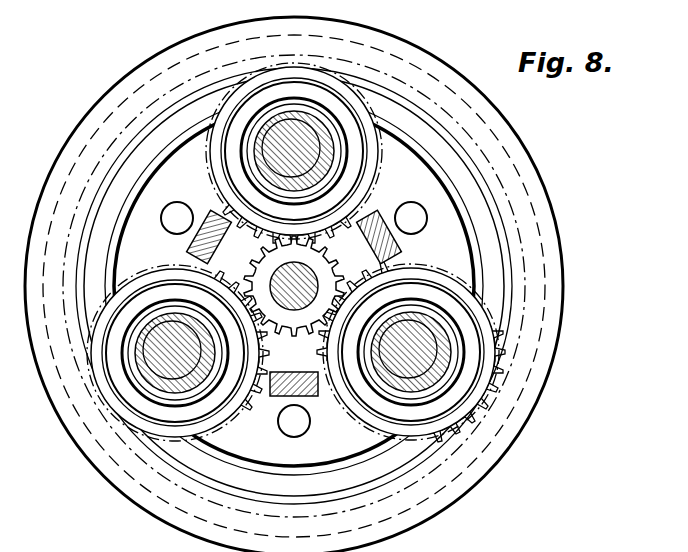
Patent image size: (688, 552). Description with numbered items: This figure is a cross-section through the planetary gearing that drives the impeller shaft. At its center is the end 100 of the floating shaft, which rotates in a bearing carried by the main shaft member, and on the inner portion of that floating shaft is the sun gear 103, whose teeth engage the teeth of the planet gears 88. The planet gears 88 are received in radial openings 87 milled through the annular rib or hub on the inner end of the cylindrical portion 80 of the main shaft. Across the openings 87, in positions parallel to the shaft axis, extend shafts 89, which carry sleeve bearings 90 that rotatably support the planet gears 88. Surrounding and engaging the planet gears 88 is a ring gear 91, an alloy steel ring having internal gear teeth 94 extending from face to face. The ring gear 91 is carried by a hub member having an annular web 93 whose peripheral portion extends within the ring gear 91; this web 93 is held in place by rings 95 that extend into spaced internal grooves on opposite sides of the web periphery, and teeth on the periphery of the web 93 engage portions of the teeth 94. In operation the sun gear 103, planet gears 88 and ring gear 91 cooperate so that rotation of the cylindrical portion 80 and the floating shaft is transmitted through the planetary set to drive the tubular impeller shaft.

The cylindrical portion 80 is at (405, 258).
The radial openings 87 is at (372, 213).
The planet gears 88 is at (340, 105).
The shafts 89 is at (328, 165).
The sleeve bearings 90 is at (310, 118).
The ring gear 91 is at (544, 230).
The annular web 93 is at (444, 193).
The internal gear teeth 94 is at (491, 401).
The rings 95 is at (451, 157).
The end 100 is at (295, 313).
The sun gear 103 is at (236, 282).